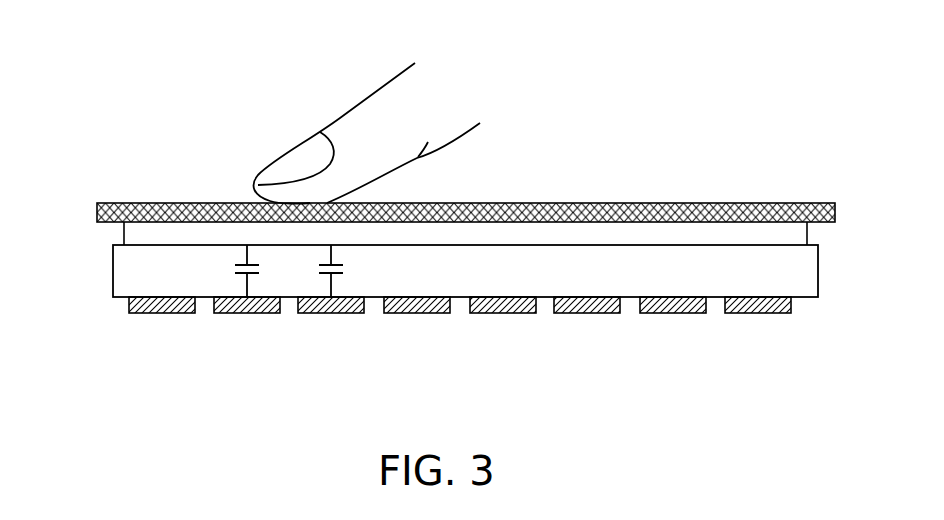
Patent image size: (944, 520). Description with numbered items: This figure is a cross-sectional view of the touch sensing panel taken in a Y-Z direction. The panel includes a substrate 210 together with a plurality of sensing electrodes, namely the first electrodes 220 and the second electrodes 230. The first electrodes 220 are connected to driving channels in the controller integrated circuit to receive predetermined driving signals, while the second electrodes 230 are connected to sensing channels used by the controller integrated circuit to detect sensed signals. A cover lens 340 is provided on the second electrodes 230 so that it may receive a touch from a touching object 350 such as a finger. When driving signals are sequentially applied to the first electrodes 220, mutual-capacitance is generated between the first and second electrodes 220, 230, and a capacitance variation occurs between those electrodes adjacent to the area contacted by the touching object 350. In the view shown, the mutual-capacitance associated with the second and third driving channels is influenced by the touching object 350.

The substrate 210 is at (118, 268).
The first electrodes 220 is at (128, 315).
The second electrodes 230 is at (132, 233).
The cover lens 340 is at (603, 207).
The touching object 350 is at (377, 115).